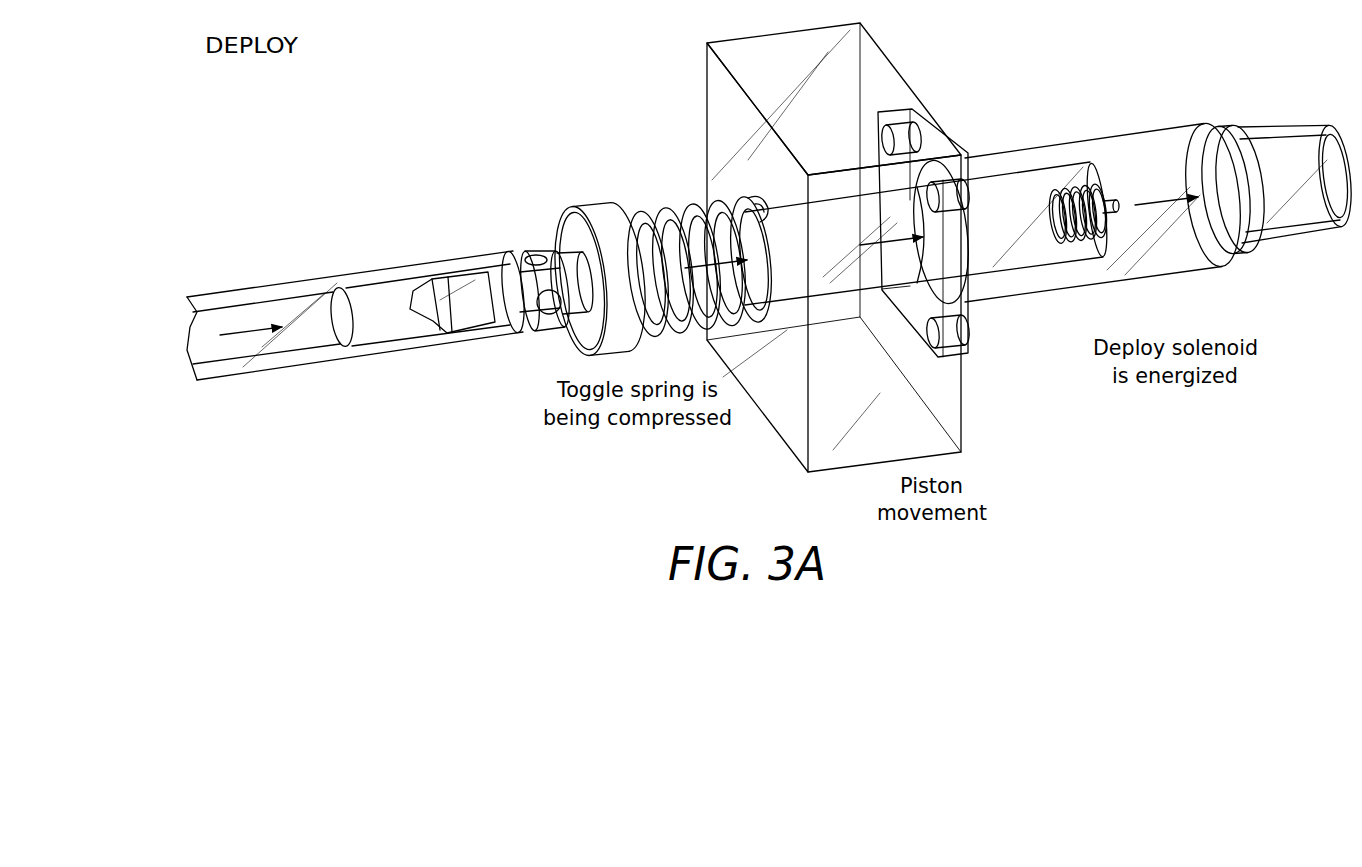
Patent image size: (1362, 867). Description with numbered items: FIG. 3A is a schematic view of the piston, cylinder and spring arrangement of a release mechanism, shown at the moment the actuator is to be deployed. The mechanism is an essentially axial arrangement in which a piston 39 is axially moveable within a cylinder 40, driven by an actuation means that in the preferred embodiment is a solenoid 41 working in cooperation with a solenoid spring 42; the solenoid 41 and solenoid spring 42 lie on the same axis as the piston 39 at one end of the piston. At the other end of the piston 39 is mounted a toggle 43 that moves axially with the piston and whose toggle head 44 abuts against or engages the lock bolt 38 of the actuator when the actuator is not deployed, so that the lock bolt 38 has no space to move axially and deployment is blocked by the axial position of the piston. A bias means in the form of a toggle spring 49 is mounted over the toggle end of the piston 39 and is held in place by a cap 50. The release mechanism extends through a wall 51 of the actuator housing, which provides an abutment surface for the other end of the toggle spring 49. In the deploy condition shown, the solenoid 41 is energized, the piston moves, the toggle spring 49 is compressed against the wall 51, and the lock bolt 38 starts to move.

The lock bolt 38 is at (333, 351).
The piston 39 is at (1017, 183).
The cylinder 40 is at (1167, 123).
The solenoid 41 is at (1177, 262).
The solenoid spring 42 is at (1077, 240).
The toggle 43 is at (492, 264).
The toggle head 44 is at (445, 277).
The toggle spring 49 is at (665, 204).
The cap 50 is at (590, 206).
The wall 51 is at (707, 60).